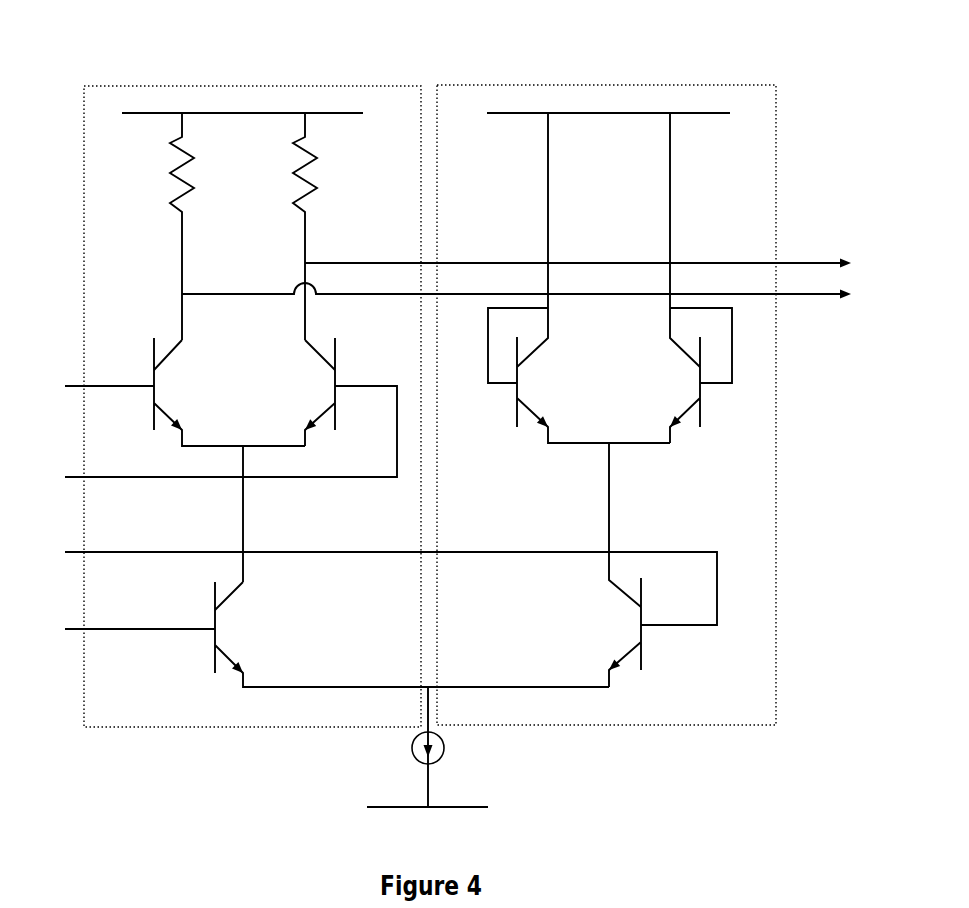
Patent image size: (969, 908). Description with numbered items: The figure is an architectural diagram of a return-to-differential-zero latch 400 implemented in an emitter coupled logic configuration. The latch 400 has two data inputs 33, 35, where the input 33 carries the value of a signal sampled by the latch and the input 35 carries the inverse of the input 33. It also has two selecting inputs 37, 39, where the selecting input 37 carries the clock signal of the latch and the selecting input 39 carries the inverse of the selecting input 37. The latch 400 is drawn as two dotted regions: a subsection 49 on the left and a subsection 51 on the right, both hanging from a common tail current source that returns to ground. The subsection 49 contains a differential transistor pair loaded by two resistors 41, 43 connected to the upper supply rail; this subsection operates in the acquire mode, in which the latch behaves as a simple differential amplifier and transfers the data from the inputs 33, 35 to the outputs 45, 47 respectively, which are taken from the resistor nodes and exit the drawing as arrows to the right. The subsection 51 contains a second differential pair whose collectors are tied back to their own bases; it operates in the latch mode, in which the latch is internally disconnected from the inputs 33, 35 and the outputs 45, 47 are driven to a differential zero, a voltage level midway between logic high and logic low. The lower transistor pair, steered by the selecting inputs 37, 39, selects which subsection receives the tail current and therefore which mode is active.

The return-to-differential-zero latch 400 is at (430, 370).
The subsection 49 is at (252, 395).
The subsection 51 is at (606, 392).
The load resistor 41 is at (162, 226).
The load resistor 43 is at (326, 226).
The output signal 45 is at (602, 257).
The output signal 47 is at (540, 289).
The input 33 is at (92, 397).
The input 35 is at (214, 440).
The selecting input 37 is at (374, 581).
The selecting input 39 is at (123, 628).